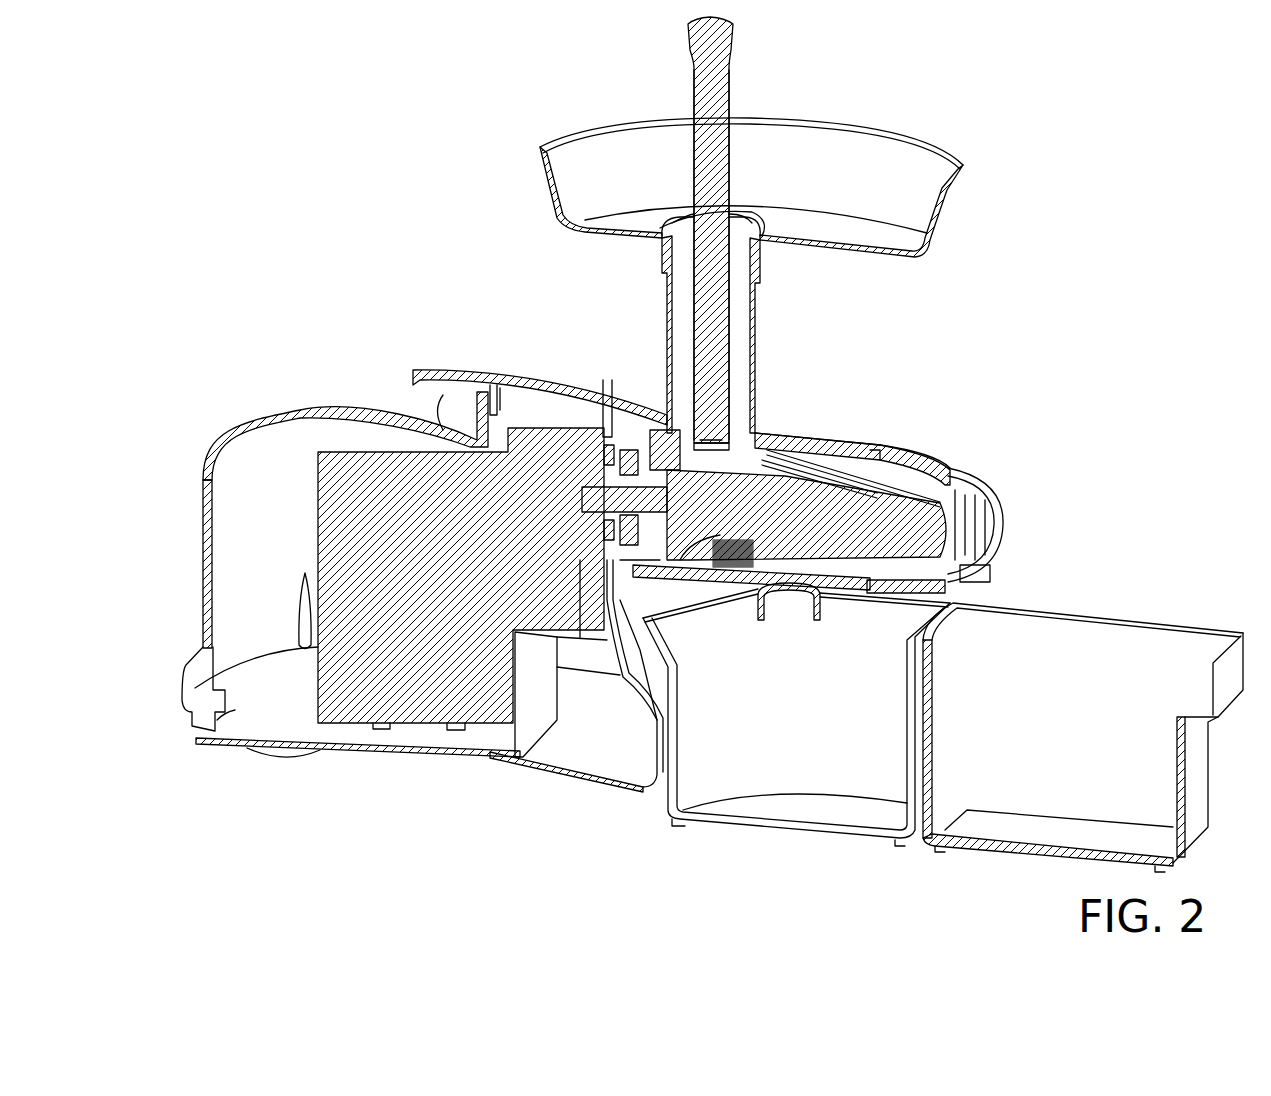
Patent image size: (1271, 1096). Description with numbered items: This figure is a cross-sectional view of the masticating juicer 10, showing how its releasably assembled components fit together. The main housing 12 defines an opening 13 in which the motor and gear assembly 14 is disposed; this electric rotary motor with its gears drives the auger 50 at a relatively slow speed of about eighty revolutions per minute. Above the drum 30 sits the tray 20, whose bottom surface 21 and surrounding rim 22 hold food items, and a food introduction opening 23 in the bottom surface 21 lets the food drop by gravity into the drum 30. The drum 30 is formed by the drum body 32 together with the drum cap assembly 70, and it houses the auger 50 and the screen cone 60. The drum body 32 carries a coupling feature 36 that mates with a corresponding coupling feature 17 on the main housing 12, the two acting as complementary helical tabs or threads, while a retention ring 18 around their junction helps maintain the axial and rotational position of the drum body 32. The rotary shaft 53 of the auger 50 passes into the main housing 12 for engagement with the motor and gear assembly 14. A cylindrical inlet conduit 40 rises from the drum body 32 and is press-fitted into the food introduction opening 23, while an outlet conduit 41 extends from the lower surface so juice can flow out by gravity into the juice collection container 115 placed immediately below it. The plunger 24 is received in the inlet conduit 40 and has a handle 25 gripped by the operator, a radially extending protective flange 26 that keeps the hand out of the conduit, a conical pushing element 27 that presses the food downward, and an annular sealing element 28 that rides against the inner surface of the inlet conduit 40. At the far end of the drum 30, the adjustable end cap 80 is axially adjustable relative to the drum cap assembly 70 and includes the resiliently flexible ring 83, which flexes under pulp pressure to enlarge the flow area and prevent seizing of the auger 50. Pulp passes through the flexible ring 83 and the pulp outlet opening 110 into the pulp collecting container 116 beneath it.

The juicer 10 is at (357, 160).
The main housing 12 is at (235, 428).
The opening 13 is at (248, 477).
The motor and gear assembly 14 is at (310, 558).
The coupling feature 17 is at (603, 437).
The retention ring 18 is at (628, 590).
The tray 20 is at (950, 148).
The bottom surface 21 is at (850, 225).
The rim 22 is at (958, 203).
The food introduction opening 23 is at (752, 228).
The plunger 24 is at (740, 90).
The handle 25 is at (694, 110).
The protective flange 26 is at (690, 218).
The pushing element 27 is at (730, 410).
The sealing element 28 is at (680, 403).
The drum 30 is at (873, 419).
The drum body 32 is at (813, 447).
The coupling feature 36 is at (640, 427).
The inlet conduit 40 is at (760, 297).
The outlet conduit 41 is at (820, 613).
The auger 50 is at (960, 540).
The rotary shaft 53 is at (590, 590).
The screen cone 60 is at (837, 473).
The drum cap assembly 70 is at (938, 438).
The adjustable end cap 80 is at (989, 463).
The flexible ring 83 is at (990, 580).
The pulp outlet opening 110 is at (999, 515).
The juice collection container 115 is at (790, 807).
The pulp collecting container 116 is at (1037, 827).